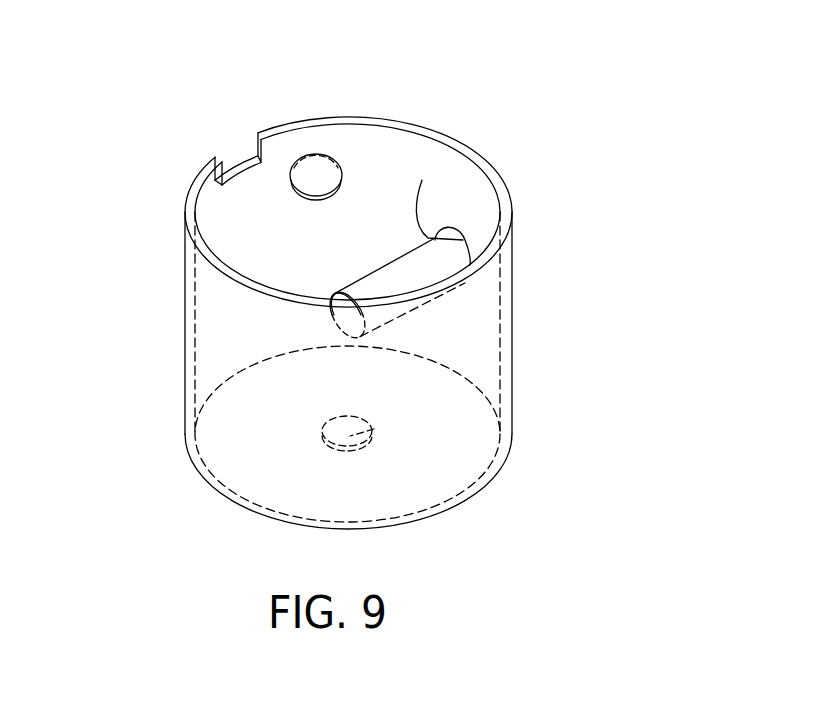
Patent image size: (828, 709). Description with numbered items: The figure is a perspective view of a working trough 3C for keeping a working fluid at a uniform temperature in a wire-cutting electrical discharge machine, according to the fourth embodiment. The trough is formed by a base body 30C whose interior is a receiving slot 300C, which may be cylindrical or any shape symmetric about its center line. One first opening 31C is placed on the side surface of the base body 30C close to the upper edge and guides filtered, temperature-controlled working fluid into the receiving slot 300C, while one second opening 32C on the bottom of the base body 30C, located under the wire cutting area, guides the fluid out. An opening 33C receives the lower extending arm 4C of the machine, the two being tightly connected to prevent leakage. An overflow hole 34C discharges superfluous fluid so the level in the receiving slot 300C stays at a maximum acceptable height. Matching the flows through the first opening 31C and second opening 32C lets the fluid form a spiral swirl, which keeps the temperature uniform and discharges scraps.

The working trough 3C is at (588, 37).
The base body 30C is at (292, 123).
The receiving slot 300C is at (287, 229).
The first opening 31C is at (315, 177).
The second opening 32C is at (374, 429).
The opening 33C is at (422, 180).
The overflow hole 34C is at (238, 157).
The lower extending arm 4C is at (397, 270).